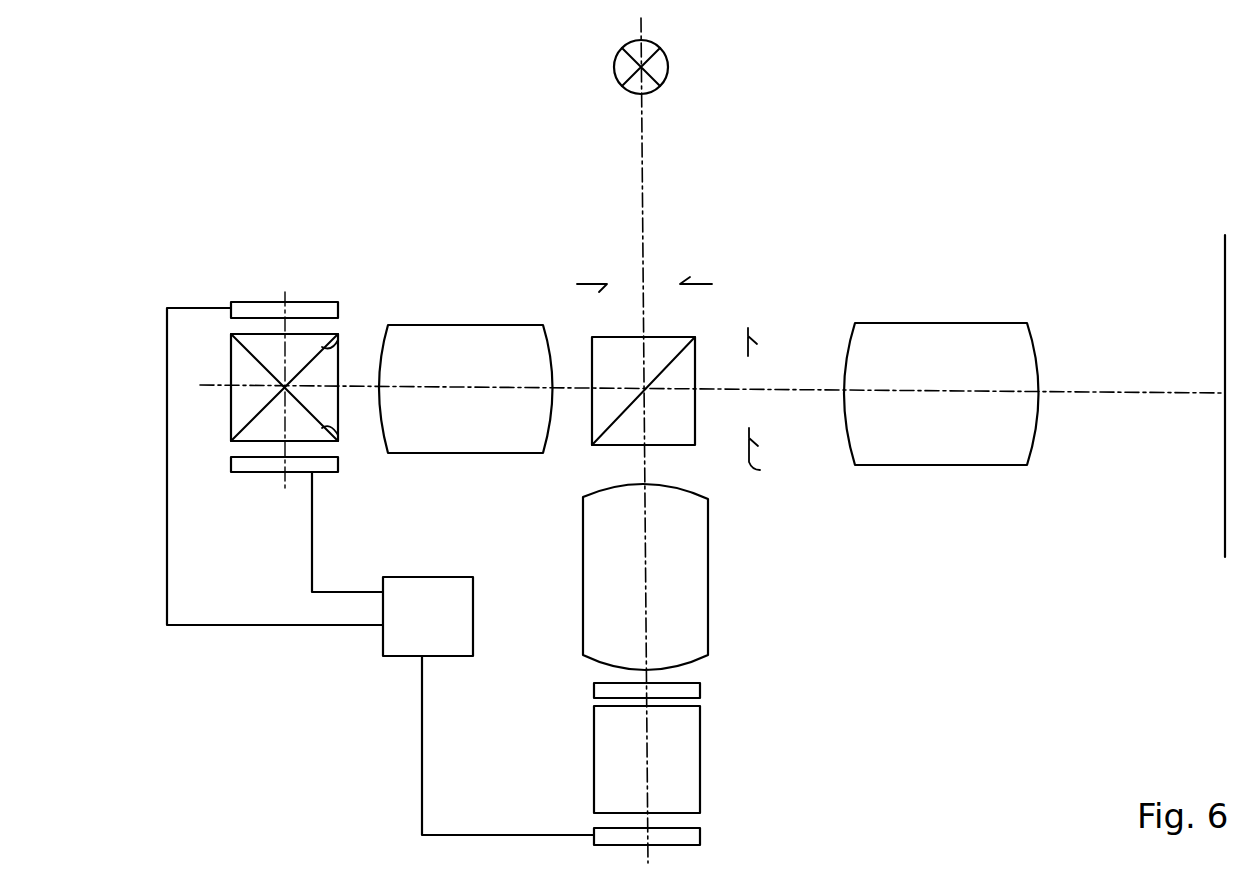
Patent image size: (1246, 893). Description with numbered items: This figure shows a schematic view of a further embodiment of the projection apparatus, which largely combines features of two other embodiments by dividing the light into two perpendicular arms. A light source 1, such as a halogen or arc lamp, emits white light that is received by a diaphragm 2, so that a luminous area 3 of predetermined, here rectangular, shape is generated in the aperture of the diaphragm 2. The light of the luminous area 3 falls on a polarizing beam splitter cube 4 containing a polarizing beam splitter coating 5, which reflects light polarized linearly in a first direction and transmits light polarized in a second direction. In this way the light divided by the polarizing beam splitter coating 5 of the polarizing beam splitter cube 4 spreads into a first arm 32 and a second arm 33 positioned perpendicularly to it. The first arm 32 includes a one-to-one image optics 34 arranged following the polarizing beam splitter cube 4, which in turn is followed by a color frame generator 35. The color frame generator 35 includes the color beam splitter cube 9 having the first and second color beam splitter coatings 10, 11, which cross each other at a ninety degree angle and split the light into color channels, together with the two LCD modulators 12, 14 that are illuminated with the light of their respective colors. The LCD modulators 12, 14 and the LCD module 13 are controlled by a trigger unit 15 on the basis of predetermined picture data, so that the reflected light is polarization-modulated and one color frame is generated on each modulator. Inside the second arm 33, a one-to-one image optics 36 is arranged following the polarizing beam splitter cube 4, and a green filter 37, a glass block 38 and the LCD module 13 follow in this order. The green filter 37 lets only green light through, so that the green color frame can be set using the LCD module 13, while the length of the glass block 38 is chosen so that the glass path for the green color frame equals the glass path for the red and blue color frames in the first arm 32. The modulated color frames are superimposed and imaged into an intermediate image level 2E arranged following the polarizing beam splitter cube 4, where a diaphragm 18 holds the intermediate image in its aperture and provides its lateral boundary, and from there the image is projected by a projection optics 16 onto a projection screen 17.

The light source 1 is at (667, 77).
The diaphragm 2 is at (700, 284).
The intermediate image level 2E is at (751, 330).
The luminous area 3 is at (655, 285).
The polarizing beam splitter cube 4 is at (683, 338).
The polarizing beam splitter coating 5 is at (675, 360).
The color beam splitter cube 9 is at (232, 423).
The first color beam splitter coating 10 is at (335, 352).
The second color beam splitter coating 11 is at (338, 435).
The LCD modulator 12 is at (330, 474).
The LCD module 13 is at (700, 838).
The LCD modulator 14 is at (328, 302).
The trigger unit 15 is at (383, 640).
The projection optics 16 is at (953, 323).
The projection screen 17 is at (1225, 250).
The diaphragm 18 is at (775, 467).
The first arm 32 is at (556, 313).
The second arm 33 is at (727, 594).
The 1:1 image optics 34 is at (498, 325).
The color frame generator 35 is at (258, 293).
The 1:1 image optics 36 is at (708, 552).
The green filter 37 is at (700, 692).
The glass block 38 is at (700, 760).